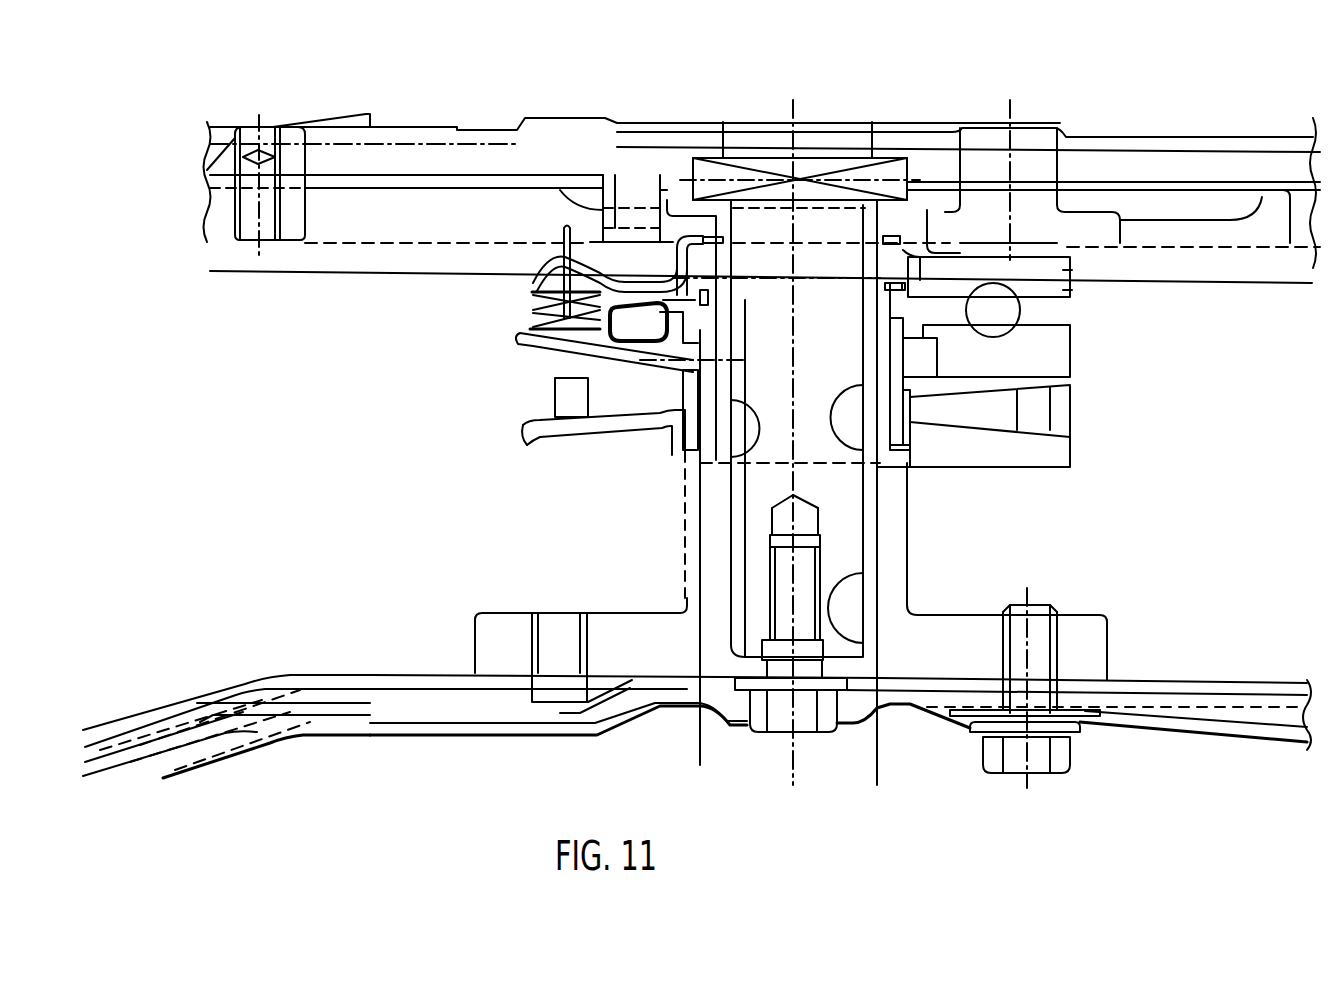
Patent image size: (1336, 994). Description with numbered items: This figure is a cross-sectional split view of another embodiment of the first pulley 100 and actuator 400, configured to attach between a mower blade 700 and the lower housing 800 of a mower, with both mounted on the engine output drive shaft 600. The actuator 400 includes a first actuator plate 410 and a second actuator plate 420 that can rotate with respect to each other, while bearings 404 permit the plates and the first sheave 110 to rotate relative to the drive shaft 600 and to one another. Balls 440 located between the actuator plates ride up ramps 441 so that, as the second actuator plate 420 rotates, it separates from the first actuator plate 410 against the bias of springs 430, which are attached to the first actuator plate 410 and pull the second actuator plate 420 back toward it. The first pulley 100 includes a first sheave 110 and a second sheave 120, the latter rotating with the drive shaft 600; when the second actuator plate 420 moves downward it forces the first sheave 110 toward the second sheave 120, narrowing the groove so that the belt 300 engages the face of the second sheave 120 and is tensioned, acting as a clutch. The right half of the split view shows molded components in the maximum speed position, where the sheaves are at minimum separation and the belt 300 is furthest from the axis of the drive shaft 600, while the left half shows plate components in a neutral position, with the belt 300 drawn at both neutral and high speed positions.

The first pulley 100 is at (1053, 453).
The first sheave 110 is at (520, 340).
The second sheave 120 is at (525, 430).
The belt 300 is at (555, 397).
The actuator 400 is at (1072, 272).
The bearings 404 is at (940, 262).
The first actuator plate 410 is at (535, 283).
The second actuator plate 420 is at (668, 322).
The springs 430 is at (530, 300).
The balls 440 is at (1012, 312).
The ramps 441 is at (562, 275).
The engine output drive shaft 600 is at (872, 132).
The mower blade 700 is at (1162, 685).
The lower housing 800 is at (1238, 274).